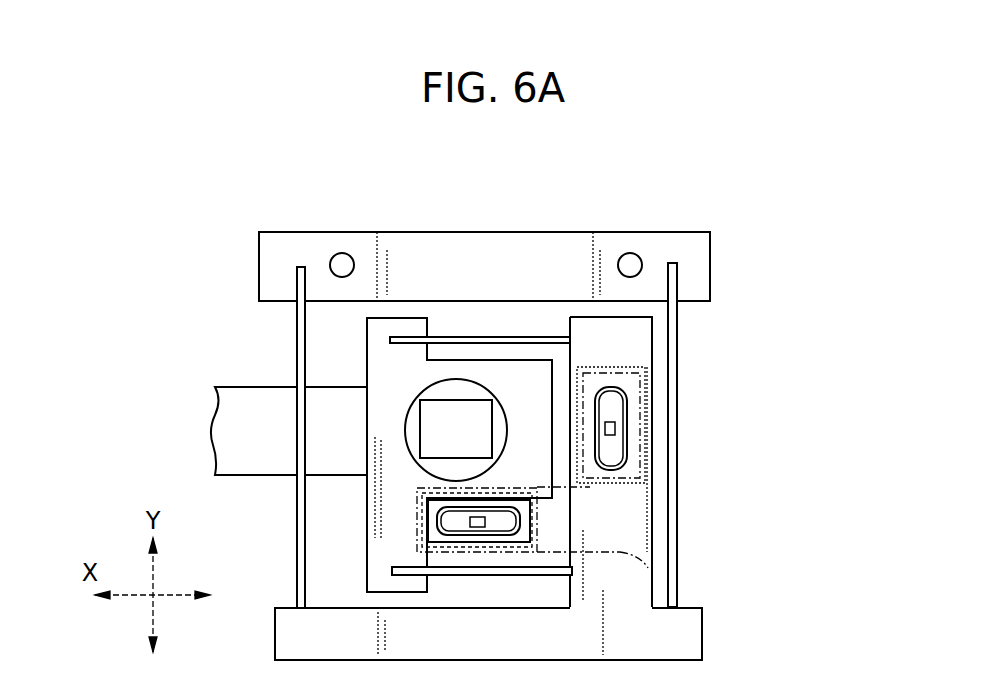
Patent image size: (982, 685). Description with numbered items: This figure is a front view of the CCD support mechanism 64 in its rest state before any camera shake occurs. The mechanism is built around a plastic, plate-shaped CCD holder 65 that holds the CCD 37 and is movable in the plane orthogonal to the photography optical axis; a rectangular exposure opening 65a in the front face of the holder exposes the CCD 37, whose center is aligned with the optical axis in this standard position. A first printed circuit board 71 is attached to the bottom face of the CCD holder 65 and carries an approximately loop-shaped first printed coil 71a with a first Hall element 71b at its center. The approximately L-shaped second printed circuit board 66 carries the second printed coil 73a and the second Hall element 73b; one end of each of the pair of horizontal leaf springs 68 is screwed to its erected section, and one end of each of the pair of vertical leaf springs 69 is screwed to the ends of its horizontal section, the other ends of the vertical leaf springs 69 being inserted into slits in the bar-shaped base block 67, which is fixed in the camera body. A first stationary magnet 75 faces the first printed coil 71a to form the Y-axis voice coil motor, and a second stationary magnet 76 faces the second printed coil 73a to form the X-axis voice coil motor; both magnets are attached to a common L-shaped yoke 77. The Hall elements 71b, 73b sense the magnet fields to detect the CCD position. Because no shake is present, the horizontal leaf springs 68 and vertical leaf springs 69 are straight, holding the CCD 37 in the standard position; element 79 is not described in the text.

The CCD support mechanism 64 is at (504, 392).
The CCD holder 65 is at (367, 359).
The exposure opening 65a is at (484, 406).
The CCD 37 is at (441, 420).
The second printed circuit board 66 is at (706, 637).
The base block 67 is at (703, 268).
The horizontal leaf springs 68 is at (487, 337).
The vertical leaf springs 69 is at (677, 322).
The first printed circuit board 71 is at (581, 553).
The first printed coil 71a is at (452, 542).
The first Hall element 71b is at (483, 529).
The second printed coil 73a is at (627, 405).
The second Hall element 73b is at (615, 428).
The first stationary magnet 75 is at (419, 527).
The second stationary magnet 76 is at (645, 472).
The L-shaped yoke 77 is at (648, 568).
The flexible circuit board 79 is at (258, 476).